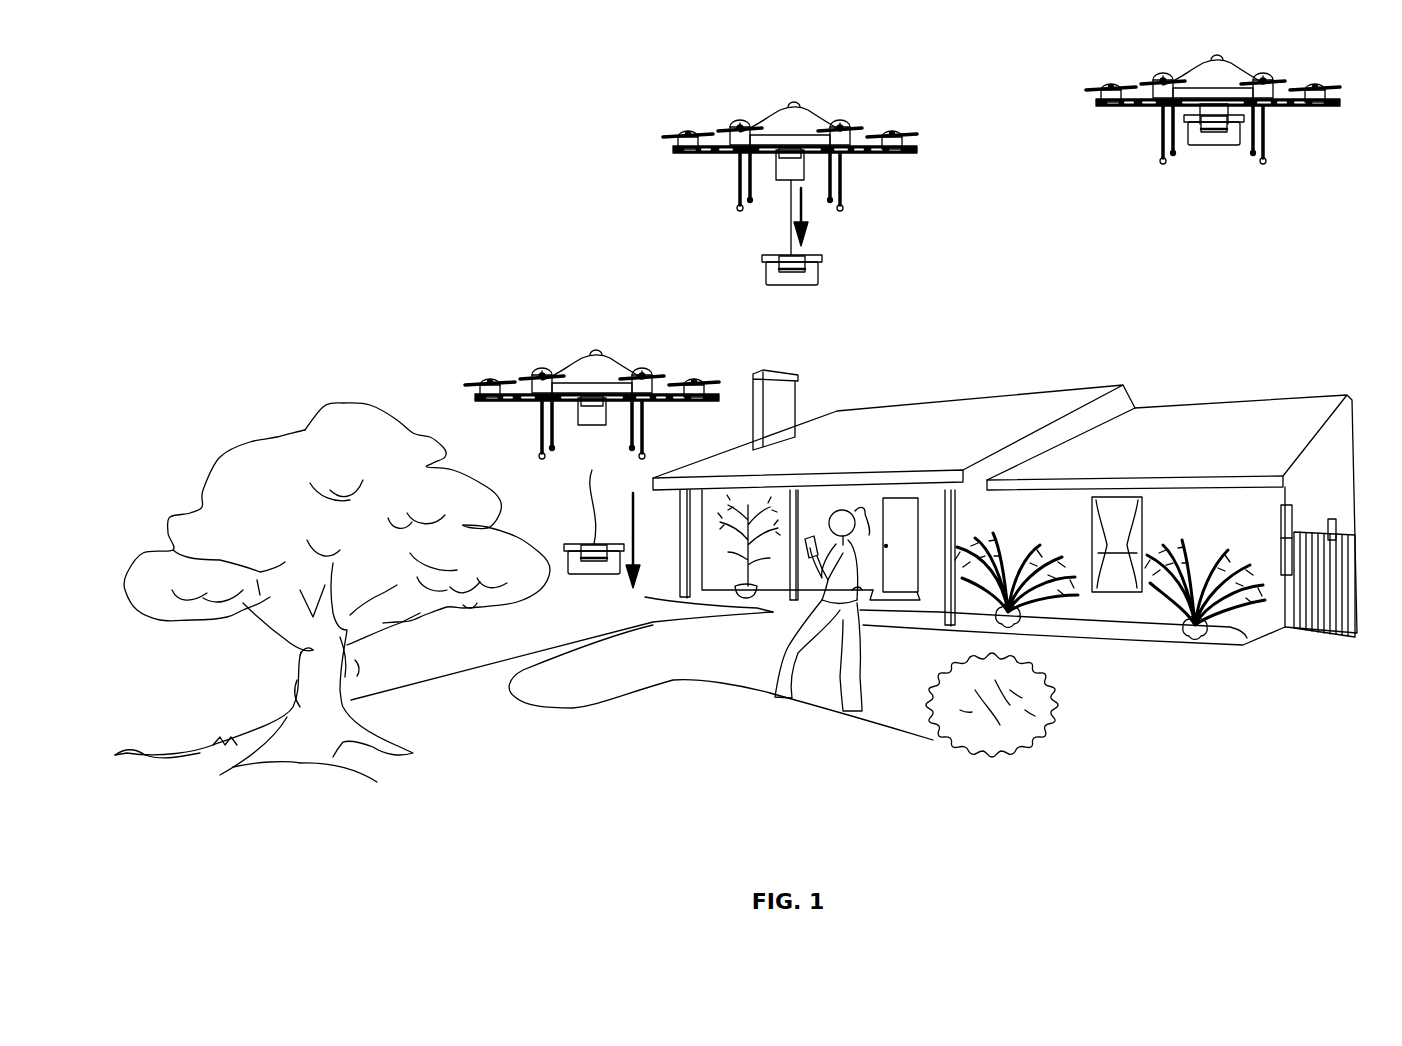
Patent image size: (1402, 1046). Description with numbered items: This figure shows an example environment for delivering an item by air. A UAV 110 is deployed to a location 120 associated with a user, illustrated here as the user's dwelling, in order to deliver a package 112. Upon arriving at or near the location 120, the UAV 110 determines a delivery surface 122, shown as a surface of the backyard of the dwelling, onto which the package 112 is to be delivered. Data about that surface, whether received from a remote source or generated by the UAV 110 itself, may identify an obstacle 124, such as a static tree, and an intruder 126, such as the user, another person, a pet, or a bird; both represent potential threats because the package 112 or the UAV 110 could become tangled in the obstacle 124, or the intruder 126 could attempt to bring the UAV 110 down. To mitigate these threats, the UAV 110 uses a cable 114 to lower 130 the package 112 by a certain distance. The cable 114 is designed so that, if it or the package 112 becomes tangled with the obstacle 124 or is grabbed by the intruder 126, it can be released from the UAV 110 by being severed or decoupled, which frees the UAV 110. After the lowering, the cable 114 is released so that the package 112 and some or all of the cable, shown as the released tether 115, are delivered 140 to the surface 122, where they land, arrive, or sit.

The UAV 110 is at (740, 176).
The package 112 is at (822, 272).
The cable 114 is at (790, 218).
The tether line 115 is at (591, 471).
The location 120 is at (1167, 403).
The delivery surface 122 is at (1185, 823).
The obstacle 124 is at (268, 434).
The intruder 126 is at (793, 633).
The lowering 130 is at (809, 232).
The delivering 140 is at (637, 511).